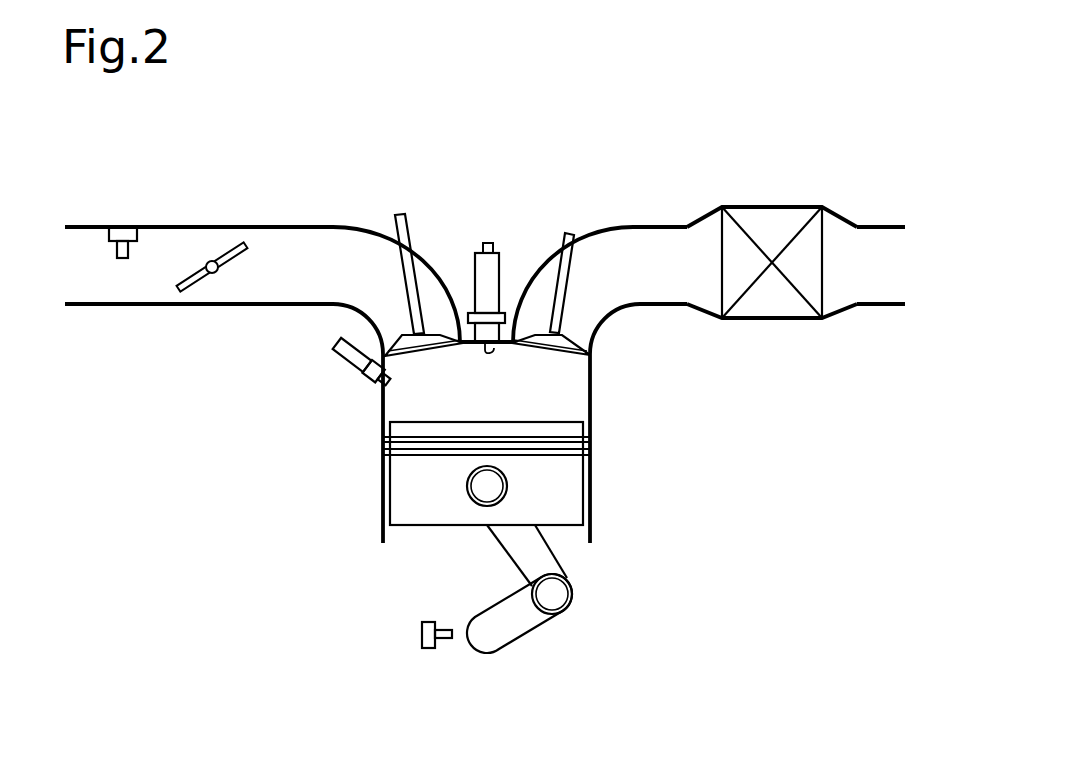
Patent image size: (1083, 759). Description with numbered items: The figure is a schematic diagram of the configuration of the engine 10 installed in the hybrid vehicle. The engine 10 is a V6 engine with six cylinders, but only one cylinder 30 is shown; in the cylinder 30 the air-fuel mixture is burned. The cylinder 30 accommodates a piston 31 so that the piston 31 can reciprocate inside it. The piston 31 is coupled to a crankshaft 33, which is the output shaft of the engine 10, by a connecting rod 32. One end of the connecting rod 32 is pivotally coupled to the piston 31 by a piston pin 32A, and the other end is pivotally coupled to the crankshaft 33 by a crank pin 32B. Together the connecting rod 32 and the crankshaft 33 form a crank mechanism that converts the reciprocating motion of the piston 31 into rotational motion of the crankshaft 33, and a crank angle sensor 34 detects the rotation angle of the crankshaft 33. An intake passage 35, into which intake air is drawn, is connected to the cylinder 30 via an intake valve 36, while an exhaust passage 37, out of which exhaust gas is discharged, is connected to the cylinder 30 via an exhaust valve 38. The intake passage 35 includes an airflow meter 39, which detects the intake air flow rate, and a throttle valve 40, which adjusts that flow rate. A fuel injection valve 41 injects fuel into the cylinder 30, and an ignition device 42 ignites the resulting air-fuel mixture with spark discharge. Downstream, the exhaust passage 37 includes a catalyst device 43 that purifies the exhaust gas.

The engine 10 is at (213, 173).
The cylinder 30 is at (473, 395).
The piston 31 is at (402, 477).
The connecting rod 32 is at (557, 553).
The piston pin 32A is at (490, 485).
The crank pin 32B is at (557, 592).
The crankshaft 33 is at (525, 620).
The crank angle sensor 34 is at (428, 612).
The intake passage 35 is at (272, 293).
The intake valve 36 is at (418, 287).
The exhaust passage 37 is at (663, 290).
The exhaust valve 38 is at (573, 270).
The airflow meter 39 is at (115, 248).
The throttle valve 40 is at (200, 287).
The fuel injection valve 41 is at (348, 370).
The ignition device 42 is at (500, 278).
The catalyst device 43 is at (775, 308).